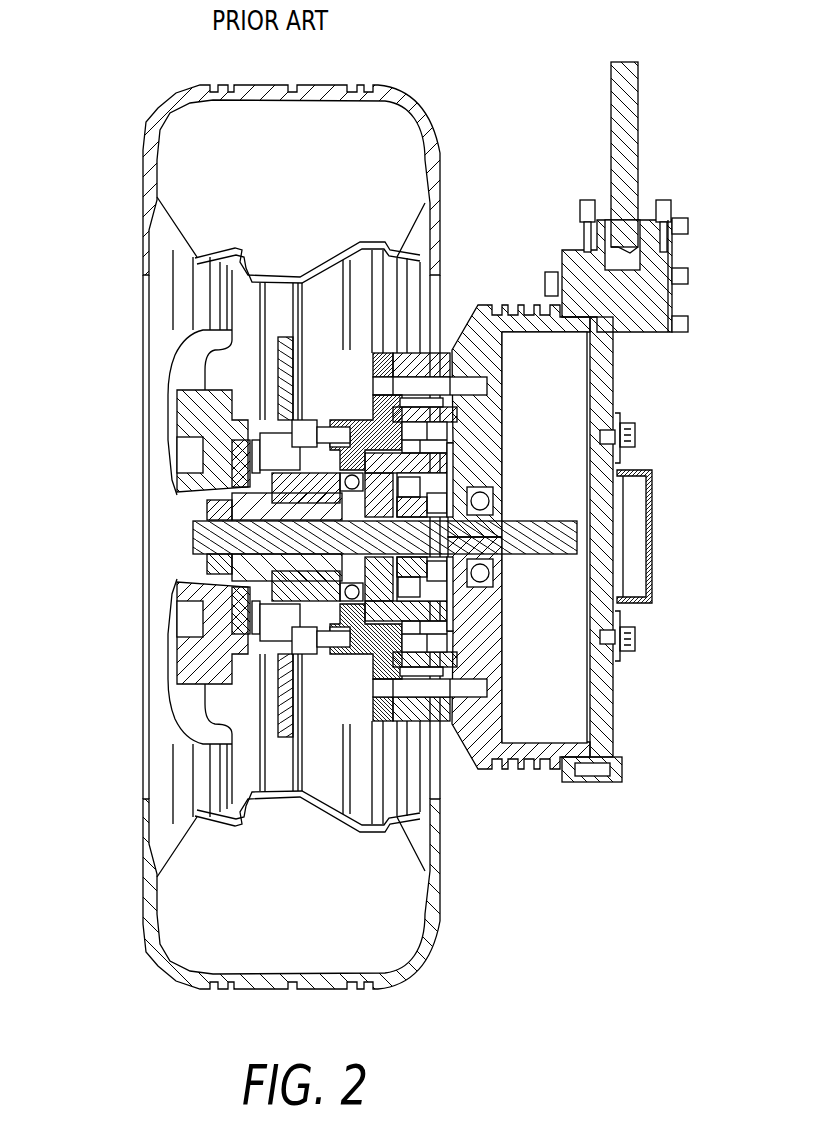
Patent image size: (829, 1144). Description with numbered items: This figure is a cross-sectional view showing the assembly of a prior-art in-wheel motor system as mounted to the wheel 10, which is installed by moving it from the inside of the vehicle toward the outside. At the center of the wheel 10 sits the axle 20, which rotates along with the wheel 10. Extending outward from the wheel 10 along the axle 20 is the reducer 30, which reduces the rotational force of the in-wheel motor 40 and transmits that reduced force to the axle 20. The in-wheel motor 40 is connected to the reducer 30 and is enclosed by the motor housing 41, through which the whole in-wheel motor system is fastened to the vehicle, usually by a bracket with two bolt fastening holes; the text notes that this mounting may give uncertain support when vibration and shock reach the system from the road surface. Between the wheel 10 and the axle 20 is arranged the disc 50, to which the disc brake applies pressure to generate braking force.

The wheel 10 is at (185, 373).
The axle 20 is at (215, 590).
The reducer 30 is at (340, 413).
The in-wheel motor 40 is at (622, 368).
The motor housing 41 is at (622, 688).
The disc 50 is at (288, 740).